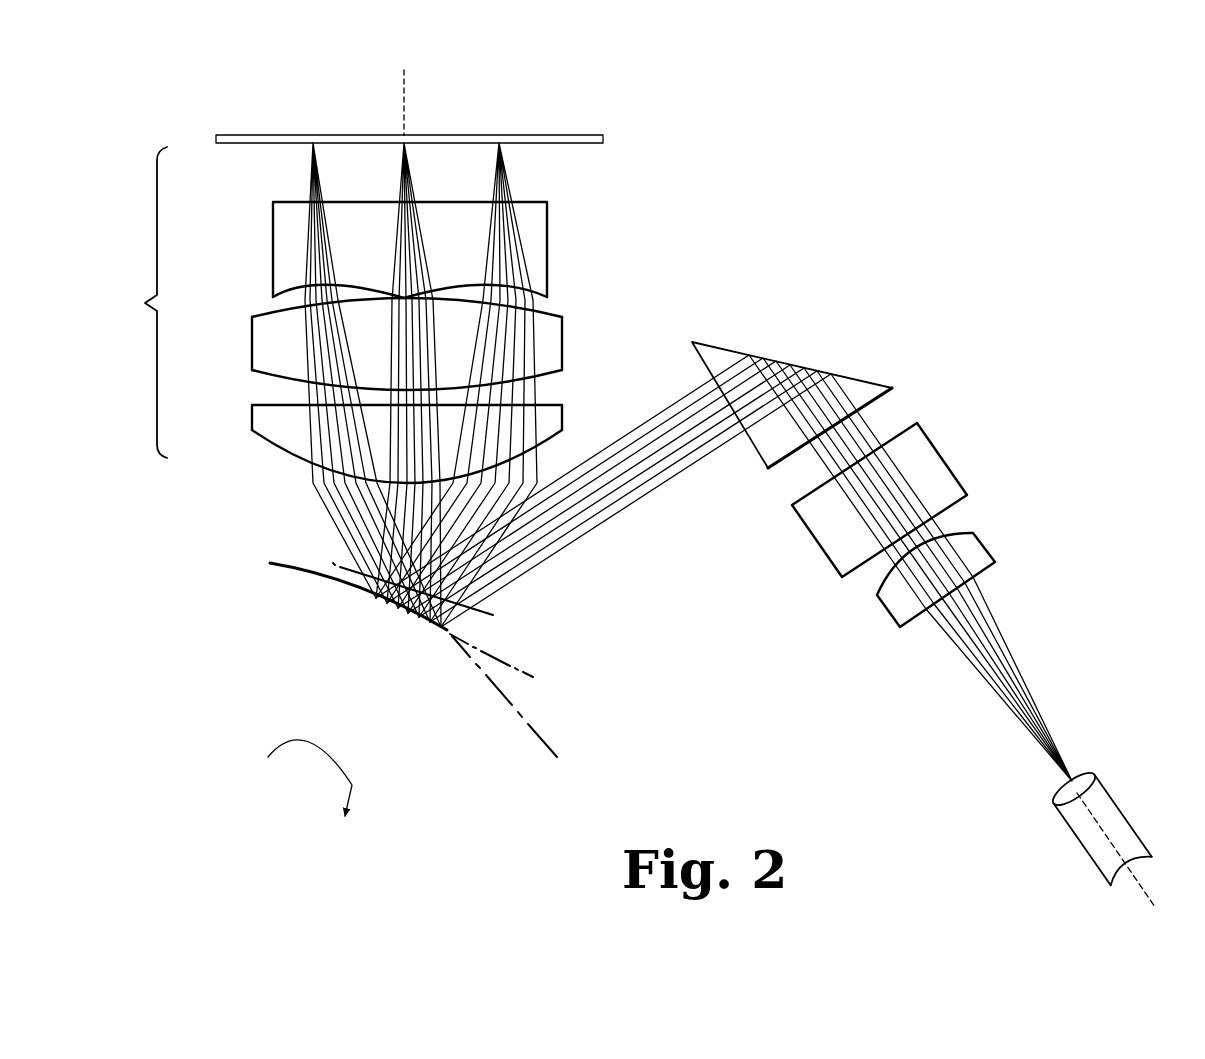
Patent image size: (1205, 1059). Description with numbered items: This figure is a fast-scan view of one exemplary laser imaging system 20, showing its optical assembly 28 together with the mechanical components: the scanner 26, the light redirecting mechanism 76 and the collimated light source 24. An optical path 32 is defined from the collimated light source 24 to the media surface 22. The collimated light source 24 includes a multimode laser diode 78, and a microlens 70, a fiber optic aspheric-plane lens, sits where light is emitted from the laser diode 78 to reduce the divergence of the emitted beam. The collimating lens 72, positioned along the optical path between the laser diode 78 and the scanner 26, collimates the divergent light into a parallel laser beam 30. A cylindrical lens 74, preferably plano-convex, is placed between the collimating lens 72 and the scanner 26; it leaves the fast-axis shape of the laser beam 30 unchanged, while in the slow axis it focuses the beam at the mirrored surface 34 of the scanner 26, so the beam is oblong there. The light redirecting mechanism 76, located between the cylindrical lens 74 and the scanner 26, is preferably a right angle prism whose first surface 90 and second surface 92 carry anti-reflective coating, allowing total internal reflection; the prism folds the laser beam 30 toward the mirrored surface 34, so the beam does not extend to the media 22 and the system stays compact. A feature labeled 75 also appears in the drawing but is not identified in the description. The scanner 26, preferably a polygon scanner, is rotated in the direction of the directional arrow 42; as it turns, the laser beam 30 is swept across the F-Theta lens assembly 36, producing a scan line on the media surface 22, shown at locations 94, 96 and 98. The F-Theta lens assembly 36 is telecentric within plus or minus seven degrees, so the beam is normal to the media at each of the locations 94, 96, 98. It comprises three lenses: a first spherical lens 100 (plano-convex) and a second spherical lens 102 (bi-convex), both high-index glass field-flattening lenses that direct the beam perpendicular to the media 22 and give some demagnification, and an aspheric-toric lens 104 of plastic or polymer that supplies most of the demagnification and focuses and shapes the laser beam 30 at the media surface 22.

The laser imaging system 20 is at (203, 116).
The media surface 22 is at (583, 143).
The collimated light source 24 is at (1143, 745).
The scanner 26 is at (347, 659).
The optical assembly 28 is at (950, 300).
The laser beam 30 is at (937, 522).
The optical path 32 is at (404, 88).
The mirrored surface 34 is at (284, 563).
The F-Theta lens assembly 36 is at (138, 302).
The directional arrow 42 is at (350, 762).
The microlens 70 is at (1078, 776).
The collimating lens 72 is at (986, 546).
The cylindrical lens 74 is at (940, 455).
The beam path 75 is at (1006, 406).
The light redirecting mechanism 76 is at (868, 372).
The multimode laser diode 78 is at (1122, 829).
The first surface 90 is at (887, 389).
The second surface 92 is at (702, 356).
The location 94 is at (318, 174).
The location 96 is at (410, 172).
The location 98 is at (503, 172).
The first spherical lens 100 is at (270, 422).
The second spherical lens 102 is at (266, 340).
The aspheric-toric lens 104 is at (287, 241).